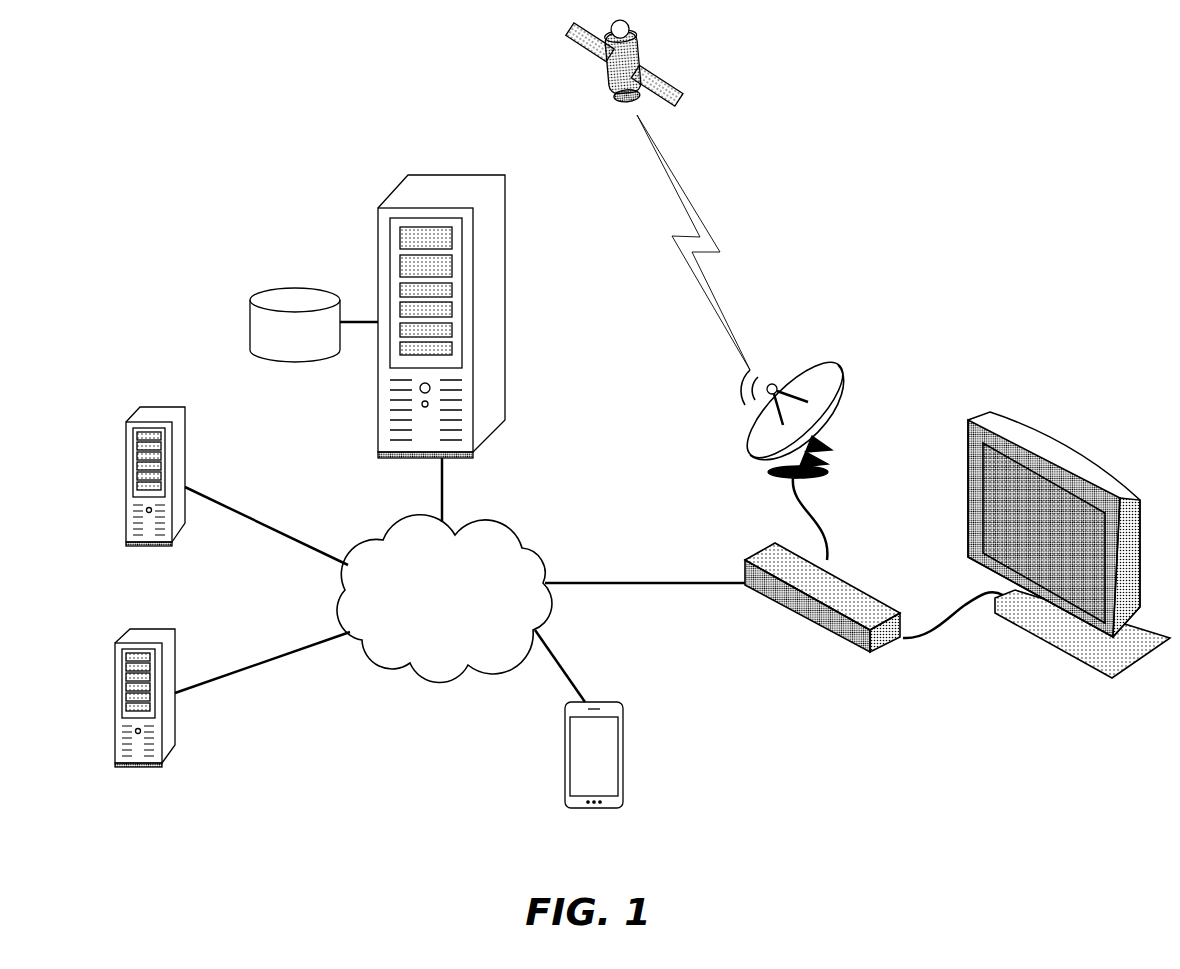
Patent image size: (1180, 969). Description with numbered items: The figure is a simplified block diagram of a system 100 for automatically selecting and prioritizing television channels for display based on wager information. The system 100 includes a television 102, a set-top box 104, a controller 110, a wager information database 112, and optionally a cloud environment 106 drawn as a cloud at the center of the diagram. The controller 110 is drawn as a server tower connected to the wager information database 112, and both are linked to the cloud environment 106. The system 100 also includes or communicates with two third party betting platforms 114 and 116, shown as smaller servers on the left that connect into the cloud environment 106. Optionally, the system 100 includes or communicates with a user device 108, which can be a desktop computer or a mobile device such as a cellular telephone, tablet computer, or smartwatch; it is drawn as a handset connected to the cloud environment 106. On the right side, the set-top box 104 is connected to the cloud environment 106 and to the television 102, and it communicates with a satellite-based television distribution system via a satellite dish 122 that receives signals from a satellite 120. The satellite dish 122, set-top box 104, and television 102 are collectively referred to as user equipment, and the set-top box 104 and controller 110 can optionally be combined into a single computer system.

The system 100 is at (196, 121).
The television 102 is at (1042, 428).
The set-top box 104 is at (840, 645).
The cloud environment 106 is at (430, 683).
The user device 108 is at (627, 740).
The controller 110 is at (405, 190).
The wager information database 112 is at (250, 302).
The third party betting platform 114 is at (126, 425).
The third party betting platform 116 is at (115, 668).
The satellite 120 is at (667, 64).
The satellite dish 122 is at (836, 365).